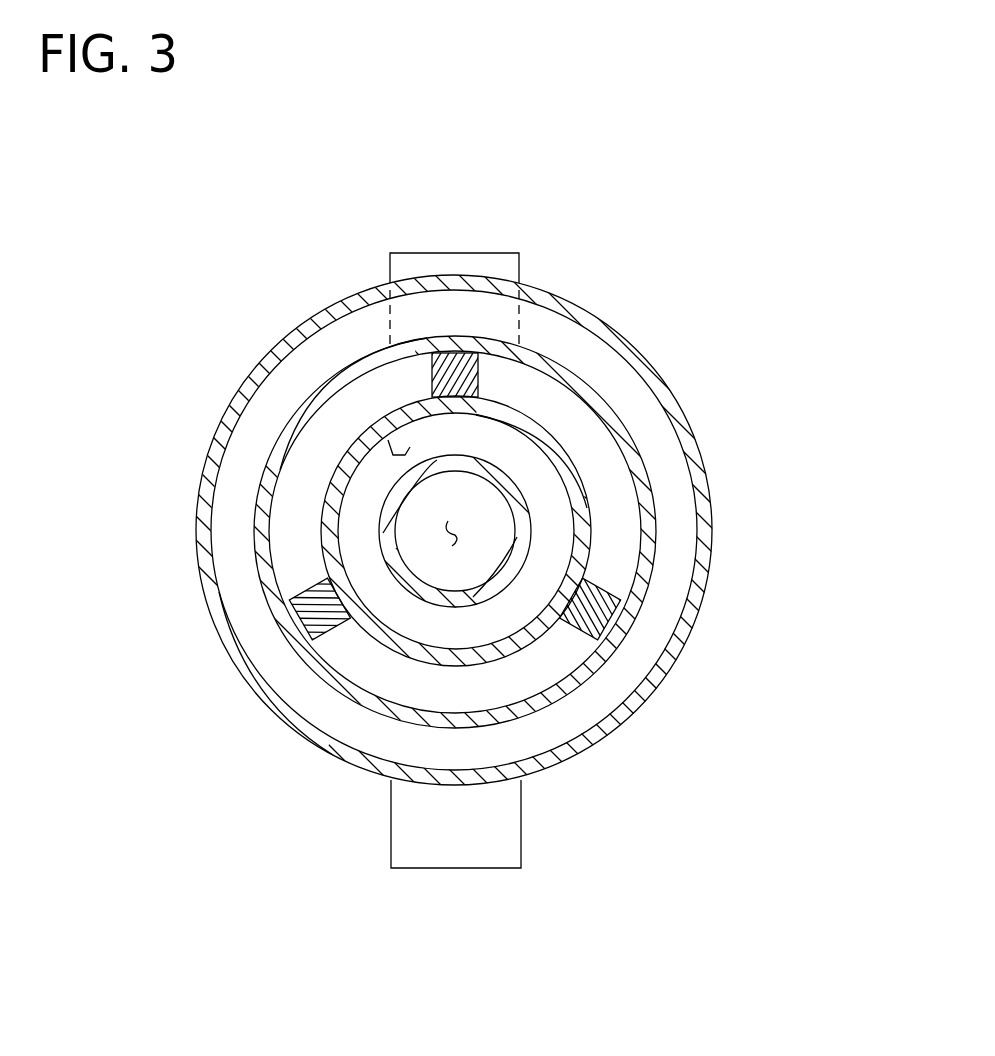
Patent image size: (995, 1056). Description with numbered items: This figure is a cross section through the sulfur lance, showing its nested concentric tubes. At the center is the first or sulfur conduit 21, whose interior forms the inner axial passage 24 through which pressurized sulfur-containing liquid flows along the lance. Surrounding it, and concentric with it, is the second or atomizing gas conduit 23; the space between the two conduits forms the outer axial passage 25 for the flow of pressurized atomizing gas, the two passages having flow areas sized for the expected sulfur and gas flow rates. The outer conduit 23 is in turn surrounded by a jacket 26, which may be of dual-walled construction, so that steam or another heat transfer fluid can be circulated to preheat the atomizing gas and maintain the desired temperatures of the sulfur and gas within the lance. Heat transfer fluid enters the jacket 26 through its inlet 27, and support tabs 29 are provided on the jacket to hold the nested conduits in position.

The first or sulfur conduit 21 is at (517, 519).
The second or atomizing gas conduit 23 is at (547, 443).
The inner axial passage 24 is at (448, 537).
The outer axial passage 25 is at (393, 450).
The jacket 26 is at (643, 573).
The inlet 27 is at (519, 268).
The support tabs 29 is at (521, 833).